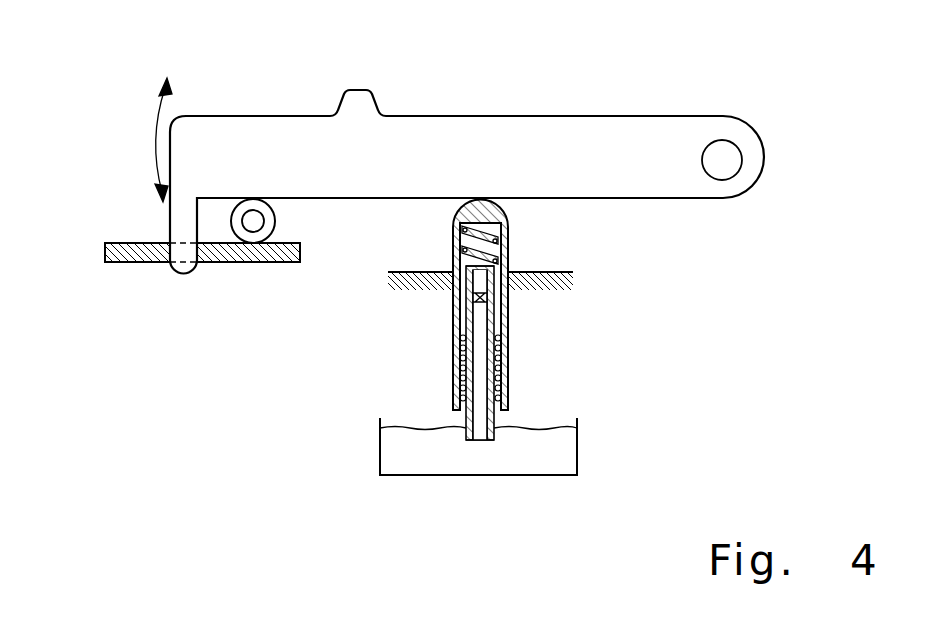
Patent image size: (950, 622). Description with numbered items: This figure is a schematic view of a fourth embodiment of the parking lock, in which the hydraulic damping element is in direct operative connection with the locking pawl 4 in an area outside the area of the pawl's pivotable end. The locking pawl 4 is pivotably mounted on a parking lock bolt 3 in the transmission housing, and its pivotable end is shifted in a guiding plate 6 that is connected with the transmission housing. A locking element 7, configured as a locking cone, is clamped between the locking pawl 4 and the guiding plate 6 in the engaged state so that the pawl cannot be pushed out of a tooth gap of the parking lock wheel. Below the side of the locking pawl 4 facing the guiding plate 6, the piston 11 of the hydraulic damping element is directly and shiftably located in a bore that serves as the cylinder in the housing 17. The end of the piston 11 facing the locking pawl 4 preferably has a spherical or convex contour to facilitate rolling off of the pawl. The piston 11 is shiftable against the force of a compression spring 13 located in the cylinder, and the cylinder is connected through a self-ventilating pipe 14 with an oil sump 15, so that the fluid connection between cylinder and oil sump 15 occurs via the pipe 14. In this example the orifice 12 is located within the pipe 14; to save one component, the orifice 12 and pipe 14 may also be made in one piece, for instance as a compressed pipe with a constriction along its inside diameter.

The parking lock bolt 3 is at (722, 168).
The locking pawl 4 is at (592, 157).
The guiding plate 6 is at (128, 245).
The locking element 7 is at (253, 200).
The piston 11 is at (507, 213).
The orifice 12 is at (507, 317).
The compression spring 13 is at (460, 378).
The self-ventilating pipe 14 is at (490, 422).
The oil sump 15 is at (550, 455).
The housing 17 is at (573, 282).